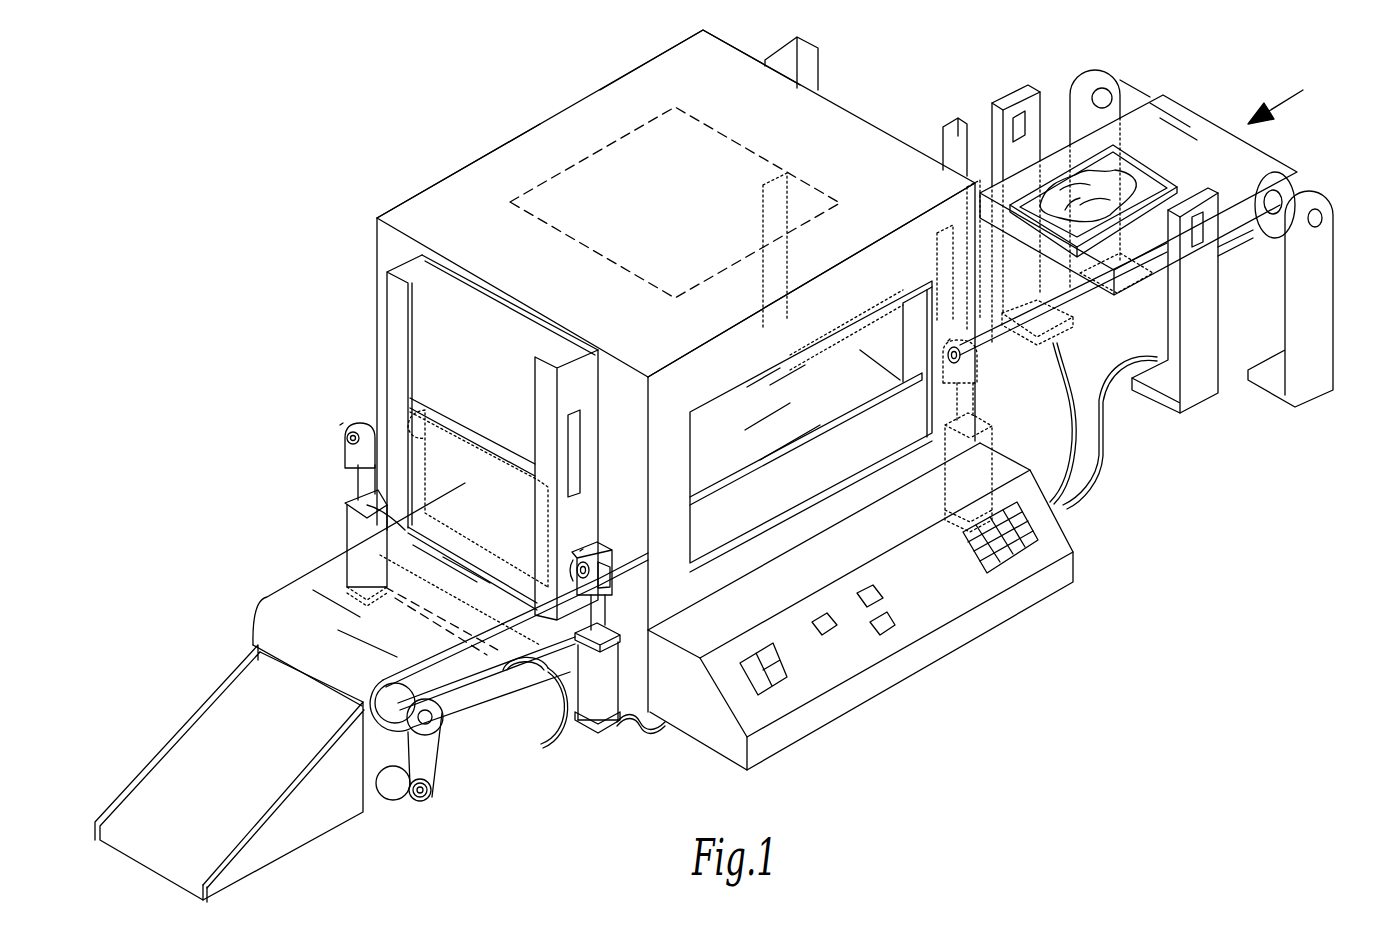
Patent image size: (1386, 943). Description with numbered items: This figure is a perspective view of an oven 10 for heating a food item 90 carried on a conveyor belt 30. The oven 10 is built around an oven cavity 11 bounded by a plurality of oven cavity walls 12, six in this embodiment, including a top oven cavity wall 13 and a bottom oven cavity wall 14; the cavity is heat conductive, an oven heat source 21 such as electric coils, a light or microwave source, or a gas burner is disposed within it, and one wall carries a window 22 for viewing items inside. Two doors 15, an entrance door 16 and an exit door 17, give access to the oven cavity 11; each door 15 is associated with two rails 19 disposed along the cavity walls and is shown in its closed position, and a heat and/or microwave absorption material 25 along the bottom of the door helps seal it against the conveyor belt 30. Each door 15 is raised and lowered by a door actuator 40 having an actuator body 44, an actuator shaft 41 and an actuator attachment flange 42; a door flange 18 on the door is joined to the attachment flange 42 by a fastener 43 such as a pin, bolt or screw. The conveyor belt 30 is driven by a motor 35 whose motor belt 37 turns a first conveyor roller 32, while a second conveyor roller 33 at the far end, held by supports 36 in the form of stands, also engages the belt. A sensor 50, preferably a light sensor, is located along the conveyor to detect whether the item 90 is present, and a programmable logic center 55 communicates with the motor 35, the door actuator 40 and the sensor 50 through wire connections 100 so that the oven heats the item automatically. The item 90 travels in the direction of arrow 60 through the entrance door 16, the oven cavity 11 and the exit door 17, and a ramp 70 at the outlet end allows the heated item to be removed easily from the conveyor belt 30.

The oven 10 is at (918, 70).
The oven cavity 11 is at (648, 38).
The oven cavity walls 12 is at (627, 92).
The top oven cavity wall 13 is at (483, 175).
The bottom oven cavity wall 14 is at (708, 355).
The door 15 is at (422, 415).
The entrance door 16 is at (893, 313).
The exit door 17 is at (478, 440).
The door flange 18 is at (355, 425).
The rail 19 is at (398, 270).
The oven heat source 21 is at (625, 160).
The window 22 is at (790, 380).
The heat and/or microwave absorption material 25 is at (350, 497).
The conveyor belt 30 is at (1250, 150).
The first conveyor roller 32 is at (445, 718).
The second conveyor roller 33 is at (1285, 175).
The motor 35 is at (362, 770).
The supports 36 is at (1090, 78).
The motor belt 37 is at (382, 792).
The door actuator 40 is at (345, 527).
The actuator shaft 41 is at (607, 615).
The actuator attachment flange 42 is at (348, 455).
The fastener 43 is at (347, 438).
The actuator body 44 is at (618, 672).
The sensor 50 is at (1015, 95).
The programmable logic center 55 is at (1078, 537).
The arrow 60 is at (1275, 94).
The ramp 70 is at (303, 823).
The item 90 is at (1140, 150).
The wire connections 100 is at (1077, 447).